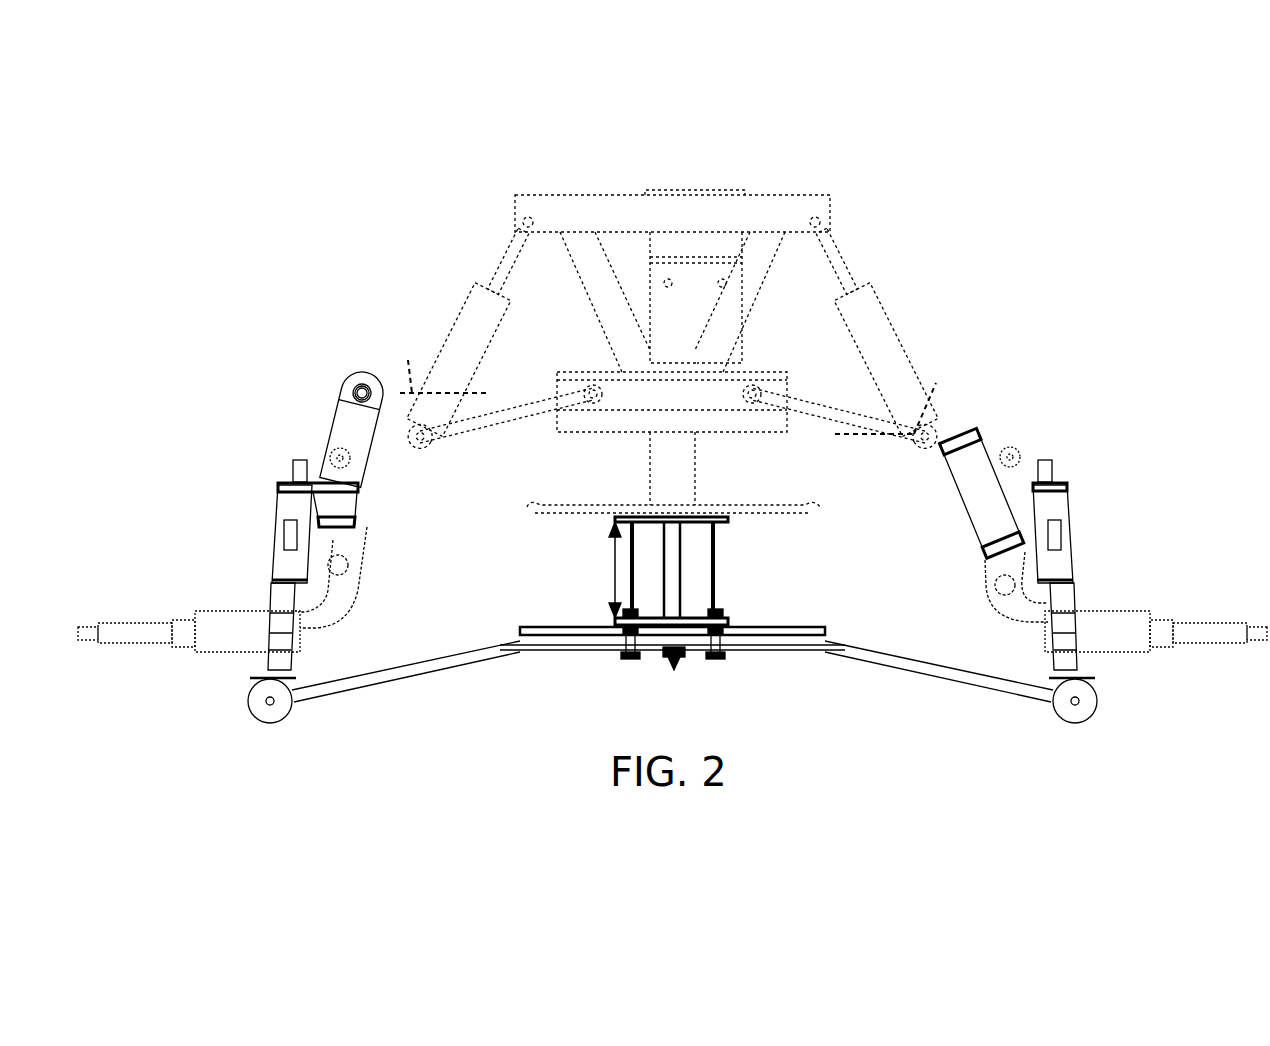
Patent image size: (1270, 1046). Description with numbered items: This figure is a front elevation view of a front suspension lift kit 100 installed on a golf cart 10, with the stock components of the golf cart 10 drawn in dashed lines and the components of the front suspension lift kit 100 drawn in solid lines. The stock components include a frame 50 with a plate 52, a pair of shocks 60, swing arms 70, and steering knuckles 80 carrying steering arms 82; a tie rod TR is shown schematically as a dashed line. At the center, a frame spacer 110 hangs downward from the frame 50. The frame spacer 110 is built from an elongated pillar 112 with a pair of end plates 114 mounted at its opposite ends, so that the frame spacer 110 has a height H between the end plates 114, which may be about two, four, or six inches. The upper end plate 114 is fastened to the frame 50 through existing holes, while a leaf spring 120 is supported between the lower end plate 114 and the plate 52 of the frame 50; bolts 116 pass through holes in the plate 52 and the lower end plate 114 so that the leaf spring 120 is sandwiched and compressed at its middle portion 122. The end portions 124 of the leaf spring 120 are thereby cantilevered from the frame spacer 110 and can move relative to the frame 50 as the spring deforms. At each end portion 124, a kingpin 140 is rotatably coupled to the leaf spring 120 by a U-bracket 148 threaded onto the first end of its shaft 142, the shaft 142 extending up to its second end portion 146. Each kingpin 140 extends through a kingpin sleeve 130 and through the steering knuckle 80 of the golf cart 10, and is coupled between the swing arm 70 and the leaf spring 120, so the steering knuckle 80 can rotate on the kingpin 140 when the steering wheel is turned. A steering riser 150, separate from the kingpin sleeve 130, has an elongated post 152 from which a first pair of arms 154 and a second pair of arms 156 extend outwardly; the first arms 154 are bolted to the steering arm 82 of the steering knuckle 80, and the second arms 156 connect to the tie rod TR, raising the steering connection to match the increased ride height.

The golf cart 10 is at (488, 228).
The front suspension lift kit 100 is at (1082, 273).
The shocks 60 is at (470, 320).
The swing arms 70 is at (504, 405).
The tie rod TR is at (676, 384).
The frame 50 is at (735, 505).
The plate 52 is at (600, 657).
The elongated post 152 is at (333, 418).
The second pair of arms 156 is at (366, 383).
The steering riser 150 is at (352, 494).
The second end portion 146 is at (285, 458).
The first pair of arms 154 is at (282, 487).
The kingpin sleeve 130 is at (276, 526).
The kingpin 140 is at (275, 605).
The shaft 142 is at (265, 658).
The U-bracket 148 is at (260, 702).
The end portions 124 is at (272, 730).
The leaf spring 120 is at (412, 673).
The steering knuckles 80 is at (143, 623).
The steering arms 82 is at (345, 616).
The end plates 114 is at (735, 522).
The frame spacer 110 is at (718, 566).
The elongated pillar 112 is at (672, 562).
The height H is at (614, 568).
The bolts 116 is at (628, 662).
The middle portion 122 is at (680, 670).